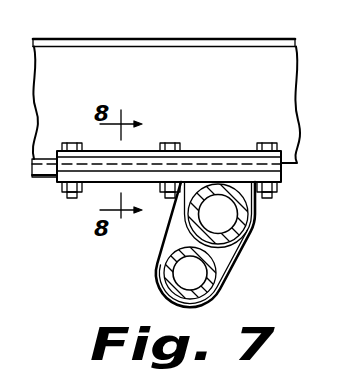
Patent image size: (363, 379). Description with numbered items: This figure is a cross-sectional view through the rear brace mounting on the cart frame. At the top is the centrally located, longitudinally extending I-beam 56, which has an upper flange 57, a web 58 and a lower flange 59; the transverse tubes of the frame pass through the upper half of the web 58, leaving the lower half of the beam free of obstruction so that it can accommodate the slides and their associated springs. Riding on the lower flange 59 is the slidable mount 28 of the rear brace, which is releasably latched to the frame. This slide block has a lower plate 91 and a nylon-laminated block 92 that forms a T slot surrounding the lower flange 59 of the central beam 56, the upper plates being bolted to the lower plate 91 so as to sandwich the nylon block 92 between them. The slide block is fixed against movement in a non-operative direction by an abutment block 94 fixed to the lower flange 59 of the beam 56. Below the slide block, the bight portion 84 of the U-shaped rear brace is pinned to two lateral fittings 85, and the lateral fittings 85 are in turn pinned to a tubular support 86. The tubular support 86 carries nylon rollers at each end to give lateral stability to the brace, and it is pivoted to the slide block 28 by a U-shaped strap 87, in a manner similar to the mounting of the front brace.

The slidable mount 28 is at (245, 121).
The I-beam 56 is at (168, 33).
The upper flange 57 is at (196, 43).
The web 58 is at (120, 65).
The lower flange 59 is at (188, 163).
The bight portion 84 is at (212, 281).
The lateral fittings 85 is at (224, 263).
The tubular support 86 is at (243, 236).
The U-shaped strap 87 is at (183, 238).
The lower plate 91 is at (67, 179).
The nylon-laminated block 92 is at (108, 157).
The abutment block 94 is at (37, 173).